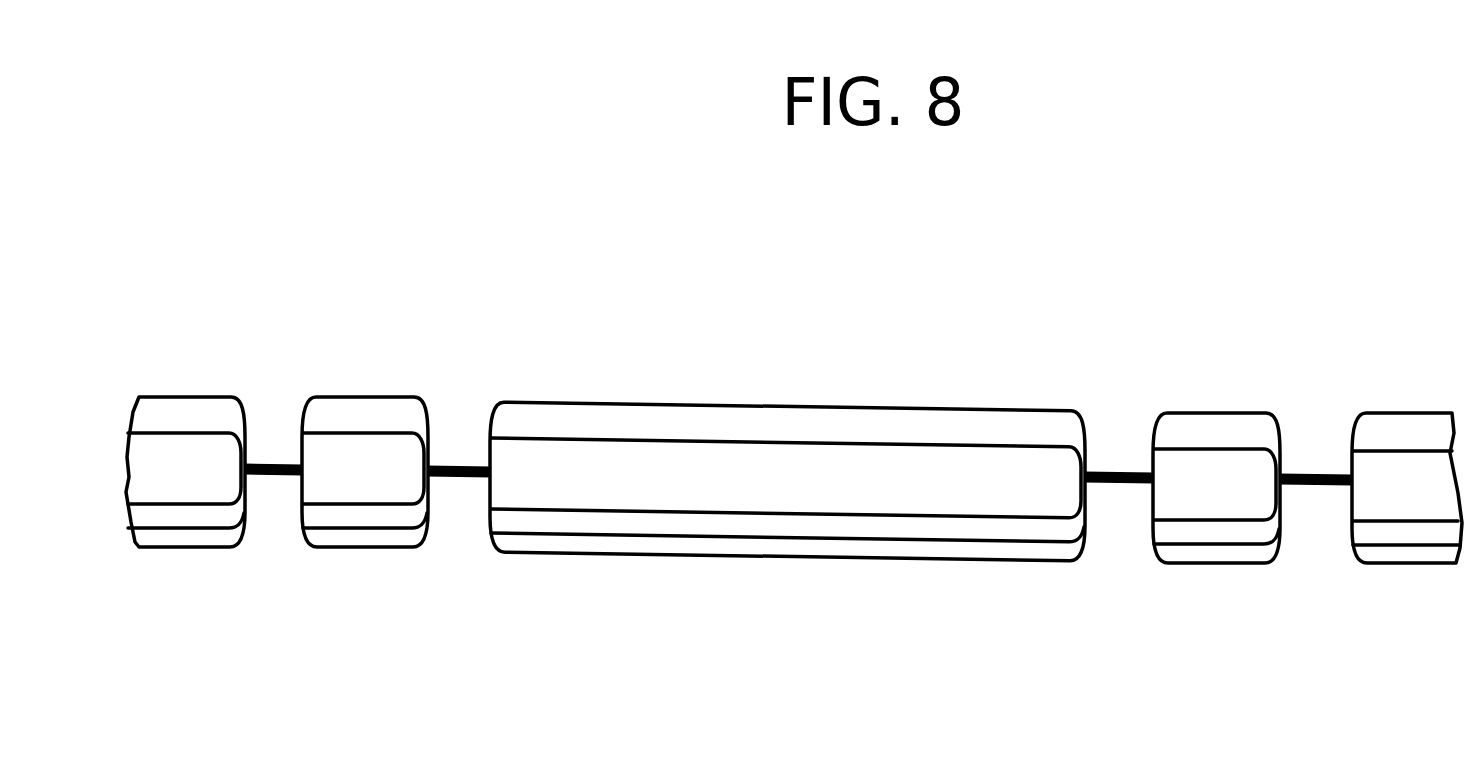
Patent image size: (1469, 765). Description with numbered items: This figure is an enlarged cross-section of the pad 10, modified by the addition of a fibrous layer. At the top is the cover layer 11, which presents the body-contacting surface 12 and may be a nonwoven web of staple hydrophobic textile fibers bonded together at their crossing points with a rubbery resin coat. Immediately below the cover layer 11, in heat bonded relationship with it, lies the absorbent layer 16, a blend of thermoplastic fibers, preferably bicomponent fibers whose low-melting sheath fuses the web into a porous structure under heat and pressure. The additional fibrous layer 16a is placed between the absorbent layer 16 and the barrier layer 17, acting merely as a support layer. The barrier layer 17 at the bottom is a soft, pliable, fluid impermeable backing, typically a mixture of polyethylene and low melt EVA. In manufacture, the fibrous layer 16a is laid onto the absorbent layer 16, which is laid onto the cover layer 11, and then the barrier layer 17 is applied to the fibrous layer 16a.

The pad 10 is at (280, 615).
The cover layer 11 is at (398, 418).
The body-contacting surface 12 is at (1058, 407).
The absorbent layer 16 is at (1185, 497).
The fibrous layer 16a is at (680, 520).
The barrier layer 17 is at (518, 543).